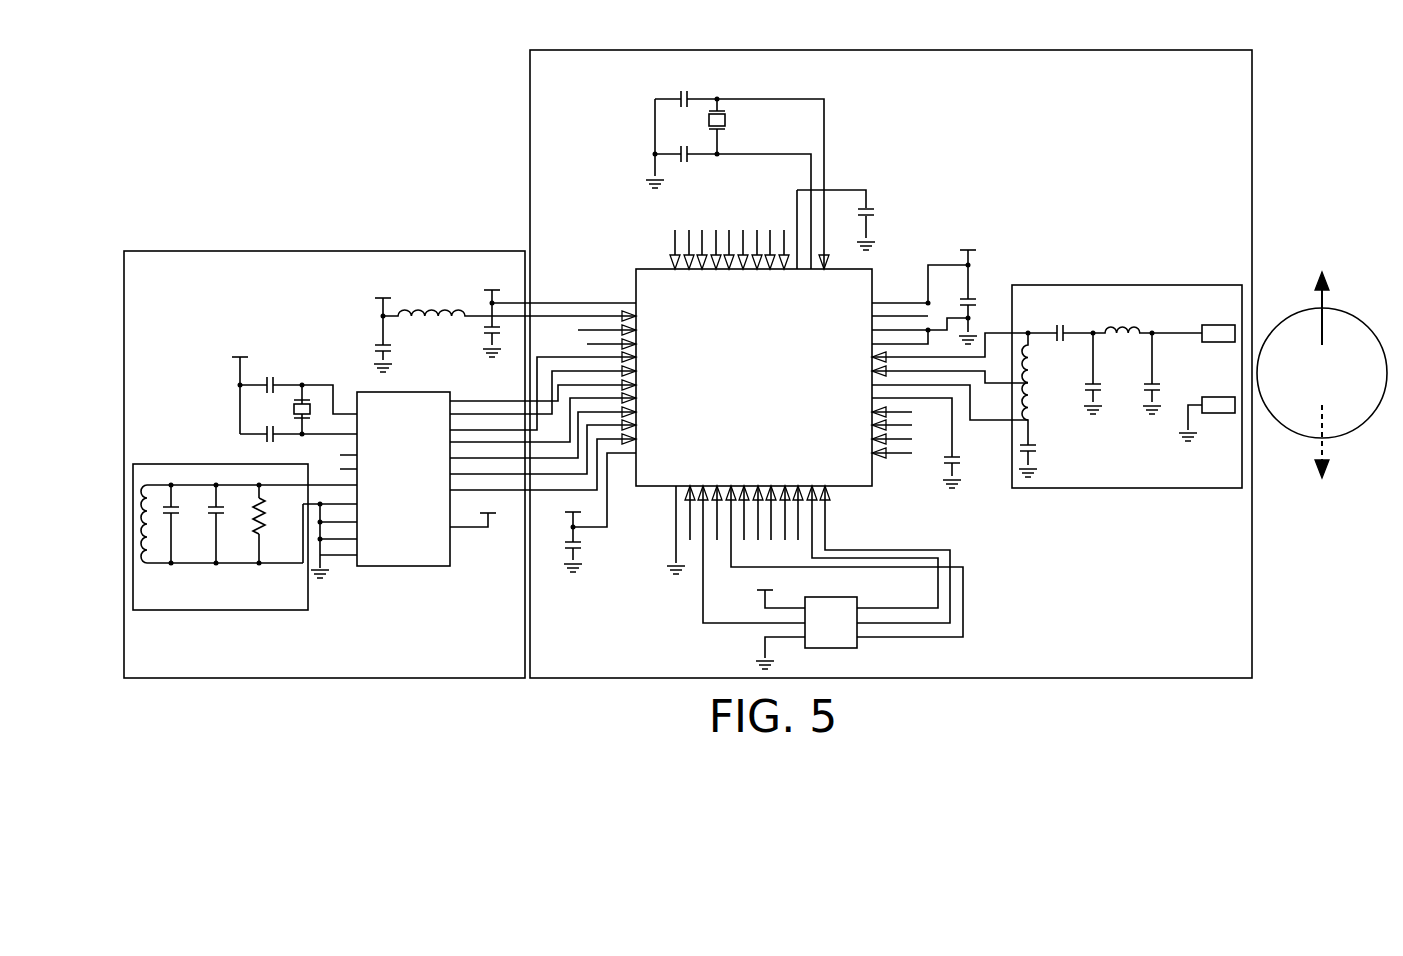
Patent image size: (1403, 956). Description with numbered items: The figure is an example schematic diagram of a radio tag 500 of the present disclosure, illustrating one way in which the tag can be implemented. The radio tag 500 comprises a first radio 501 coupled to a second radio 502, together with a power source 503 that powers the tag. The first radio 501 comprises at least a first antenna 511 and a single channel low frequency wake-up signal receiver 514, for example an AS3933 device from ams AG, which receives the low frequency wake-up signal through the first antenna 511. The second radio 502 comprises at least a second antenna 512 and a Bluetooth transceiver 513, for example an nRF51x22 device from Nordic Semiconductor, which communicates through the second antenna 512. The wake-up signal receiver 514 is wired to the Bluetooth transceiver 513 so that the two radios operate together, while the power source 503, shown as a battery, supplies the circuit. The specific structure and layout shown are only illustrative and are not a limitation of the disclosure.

The radio tag 500 is at (368, 70).
The first radio 501 is at (322, 251).
The second radio 502 is at (530, 140).
The power source 503 is at (1292, 432).
The first antenna 511 is at (228, 611).
The second antenna 512 is at (1140, 285).
The Bluetooth transceiver 513 is at (650, 268).
The single channel low frequency wake-up signal receiver 514 is at (452, 553).